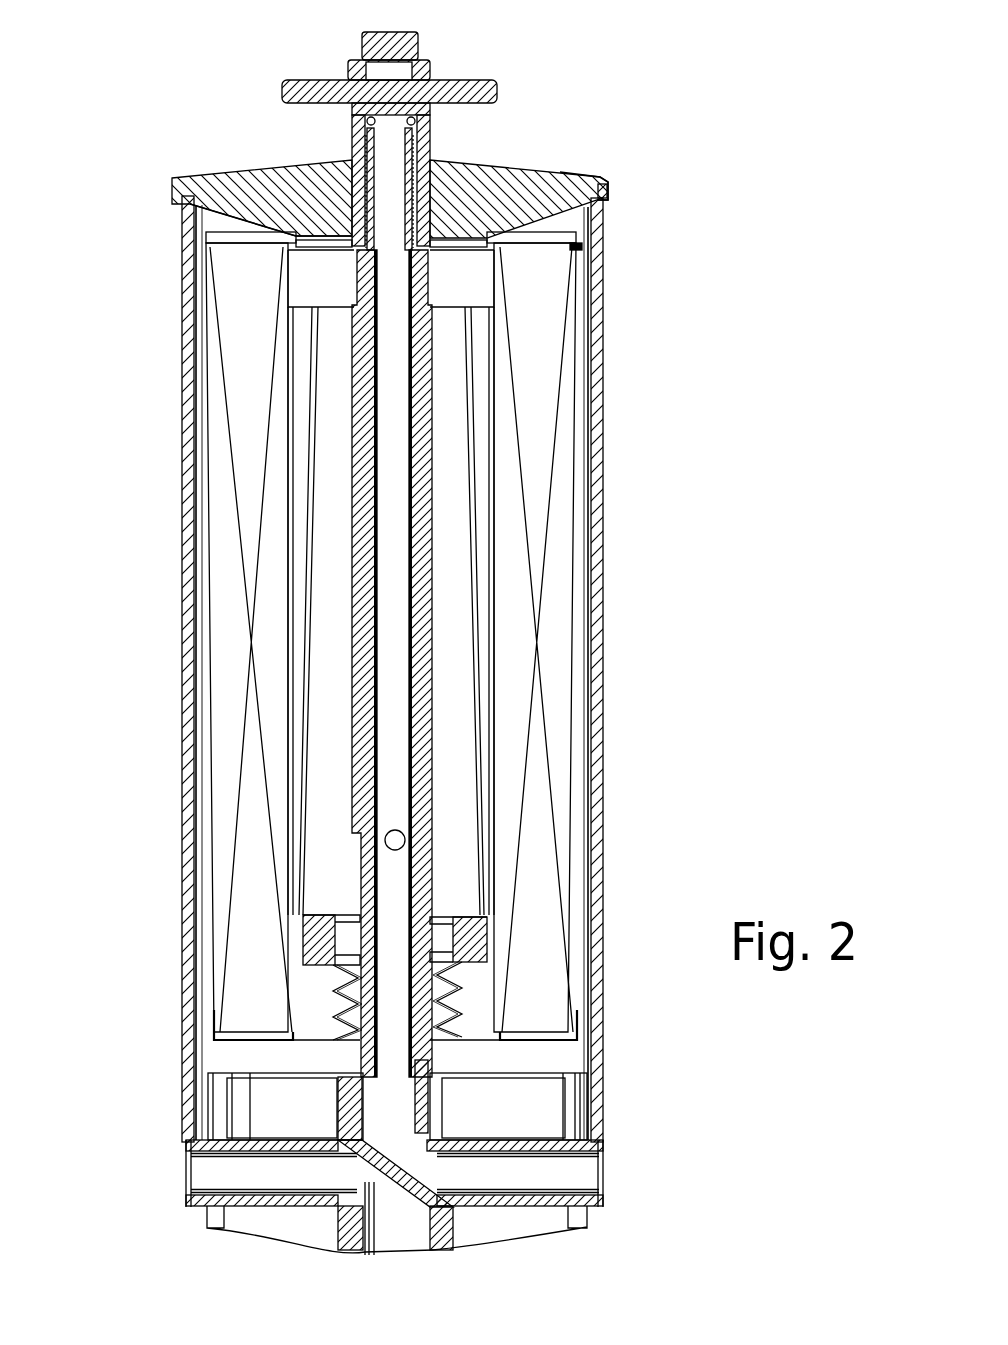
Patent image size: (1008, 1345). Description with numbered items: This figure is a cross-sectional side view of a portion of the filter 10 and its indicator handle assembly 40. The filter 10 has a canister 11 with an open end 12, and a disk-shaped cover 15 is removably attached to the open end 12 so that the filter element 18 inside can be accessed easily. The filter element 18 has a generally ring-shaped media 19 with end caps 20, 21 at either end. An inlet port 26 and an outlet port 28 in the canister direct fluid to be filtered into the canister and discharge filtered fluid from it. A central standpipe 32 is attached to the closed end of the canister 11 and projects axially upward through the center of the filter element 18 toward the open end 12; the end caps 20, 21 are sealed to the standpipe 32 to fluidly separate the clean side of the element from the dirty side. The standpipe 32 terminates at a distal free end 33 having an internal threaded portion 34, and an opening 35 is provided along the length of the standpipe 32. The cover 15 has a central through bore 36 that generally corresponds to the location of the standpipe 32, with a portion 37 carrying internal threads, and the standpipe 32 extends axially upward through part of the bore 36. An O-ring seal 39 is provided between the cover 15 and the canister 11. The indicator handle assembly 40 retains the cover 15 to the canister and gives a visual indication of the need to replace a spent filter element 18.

The filter 10 is at (692, 622).
The canister 11 is at (606, 755).
The open end 12 is at (172, 198).
The cover 15 is at (600, 178).
The filter element 18 is at (606, 345).
The media 19 is at (558, 445).
The end cap 20 is at (572, 247).
The end cap 21 is at (545, 1060).
The inlet port 26 is at (186, 1168).
The outlet port 28 is at (606, 1167).
The central standpipe 32 is at (357, 575).
The distal free end 33 is at (307, 253).
The internal threaded portion 34 is at (398, 250).
The opening 35 is at (404, 838).
The central through bore 36 is at (430, 205).
The portion with internal threads 37 is at (328, 187).
The O-ring seal 39 is at (605, 198).
The indicator handle assembly 40 is at (514, 26).